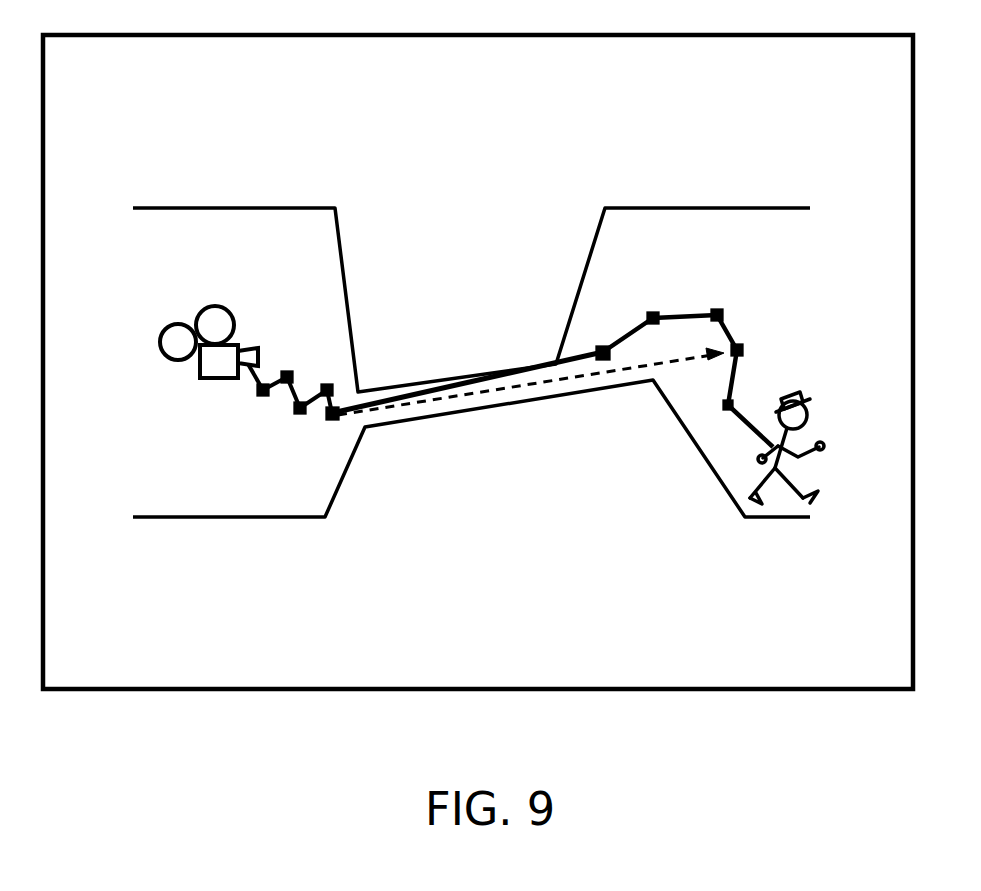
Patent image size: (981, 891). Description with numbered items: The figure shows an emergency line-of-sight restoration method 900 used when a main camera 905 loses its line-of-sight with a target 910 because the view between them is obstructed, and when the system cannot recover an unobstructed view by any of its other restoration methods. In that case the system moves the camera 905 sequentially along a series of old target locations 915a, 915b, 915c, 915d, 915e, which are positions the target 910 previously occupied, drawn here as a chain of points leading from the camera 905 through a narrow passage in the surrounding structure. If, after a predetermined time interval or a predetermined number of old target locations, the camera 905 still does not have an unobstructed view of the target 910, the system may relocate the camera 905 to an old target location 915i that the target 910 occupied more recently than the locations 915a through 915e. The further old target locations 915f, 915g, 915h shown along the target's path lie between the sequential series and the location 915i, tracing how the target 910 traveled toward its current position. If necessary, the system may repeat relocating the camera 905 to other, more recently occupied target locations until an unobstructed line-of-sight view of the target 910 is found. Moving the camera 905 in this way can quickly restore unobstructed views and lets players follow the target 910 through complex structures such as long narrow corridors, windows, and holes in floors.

The emergency line-of-sight restoration method 900 is at (481, 532).
The main camera 905 is at (203, 308).
The target 910 is at (800, 395).
The old target location 915a is at (262, 394).
The old target location 915b is at (287, 372).
The old target location 915c is at (300, 410).
The old target location 915d is at (327, 389).
The old target location 915e is at (332, 419).
The old target location 915f is at (603, 350).
The old target location 915g is at (653, 317).
The old target location 915h is at (717, 314).
The old target location 915i is at (740, 350).